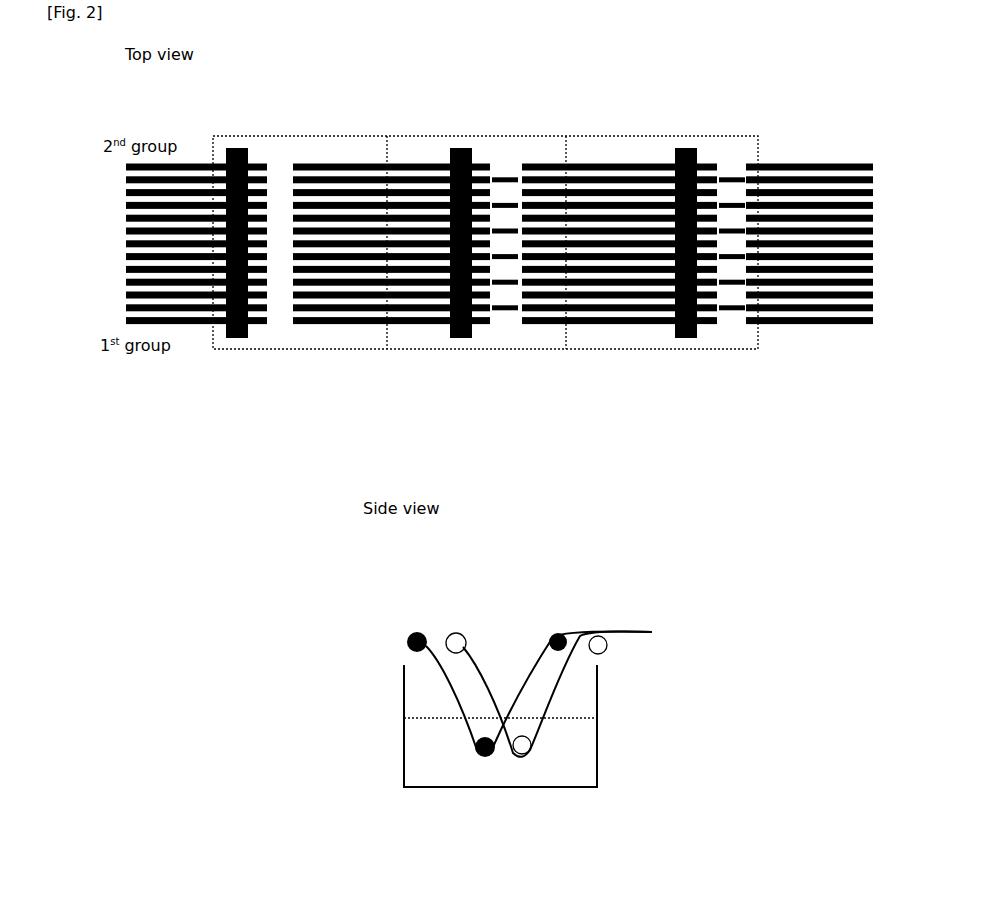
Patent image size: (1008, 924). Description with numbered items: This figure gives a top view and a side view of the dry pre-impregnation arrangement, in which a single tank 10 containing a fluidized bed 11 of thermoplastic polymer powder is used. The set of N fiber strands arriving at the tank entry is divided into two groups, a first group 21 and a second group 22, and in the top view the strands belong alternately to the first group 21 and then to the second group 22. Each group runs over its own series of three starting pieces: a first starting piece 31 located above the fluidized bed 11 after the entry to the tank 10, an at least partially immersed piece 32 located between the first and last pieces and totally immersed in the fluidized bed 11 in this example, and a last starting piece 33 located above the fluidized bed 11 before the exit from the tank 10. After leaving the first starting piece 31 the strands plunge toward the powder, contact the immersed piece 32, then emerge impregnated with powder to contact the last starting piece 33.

The tank 10 is at (485, 461).
The fluidized bed 11 is at (500, 597).
The first group of strands 21 is at (499, 459).
The second group of strands 22 is at (499, 439).
The first starting piece 31 is at (344, 369).
The at least partially immersed piece 32 is at (486, 433).
The last starting piece 33 is at (655, 373).